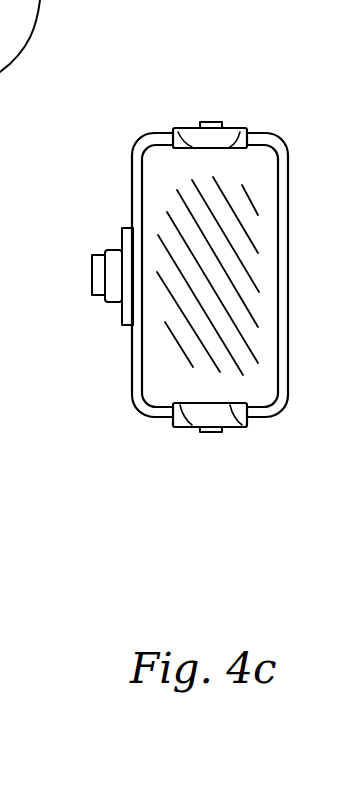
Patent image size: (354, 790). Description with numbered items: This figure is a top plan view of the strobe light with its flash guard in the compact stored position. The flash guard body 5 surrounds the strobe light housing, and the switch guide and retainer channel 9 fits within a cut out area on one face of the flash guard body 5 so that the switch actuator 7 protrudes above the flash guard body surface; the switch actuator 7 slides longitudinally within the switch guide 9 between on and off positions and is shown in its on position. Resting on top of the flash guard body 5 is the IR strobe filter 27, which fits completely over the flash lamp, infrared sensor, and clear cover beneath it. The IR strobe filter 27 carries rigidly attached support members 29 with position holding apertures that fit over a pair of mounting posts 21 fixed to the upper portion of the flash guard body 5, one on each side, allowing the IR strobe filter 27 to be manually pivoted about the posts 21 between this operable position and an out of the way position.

The flash guard body 5 is at (288, 353).
The switch actuator 7 is at (92, 296).
The switch guide and retainer channel 9 is at (121, 229).
The mounting posts 21 is at (211, 121).
The IR strobe filter 27 is at (175, 318).
The support members 29 is at (232, 128).